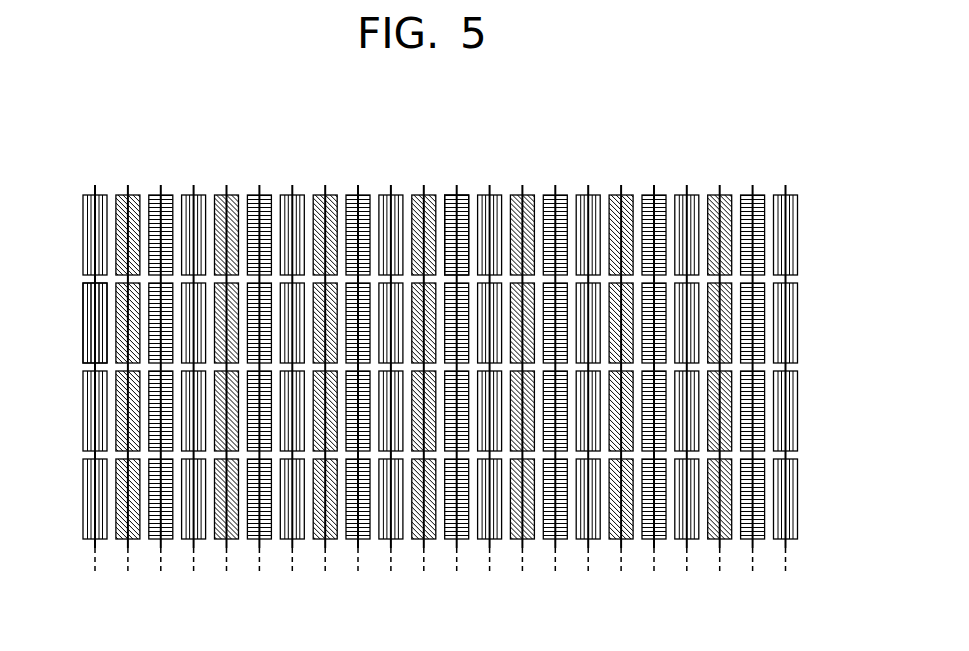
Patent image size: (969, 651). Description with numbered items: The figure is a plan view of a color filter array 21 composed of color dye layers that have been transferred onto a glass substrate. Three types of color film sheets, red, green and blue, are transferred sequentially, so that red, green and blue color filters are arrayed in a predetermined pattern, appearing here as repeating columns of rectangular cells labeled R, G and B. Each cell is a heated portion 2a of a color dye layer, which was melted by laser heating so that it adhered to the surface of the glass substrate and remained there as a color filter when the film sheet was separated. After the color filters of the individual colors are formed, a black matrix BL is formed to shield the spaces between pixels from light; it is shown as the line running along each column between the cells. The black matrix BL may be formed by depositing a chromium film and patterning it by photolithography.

The color filter array 21 is at (455, 373).
The heated portion 2a is at (458, 195).
The black matrix BL is at (342, 195).